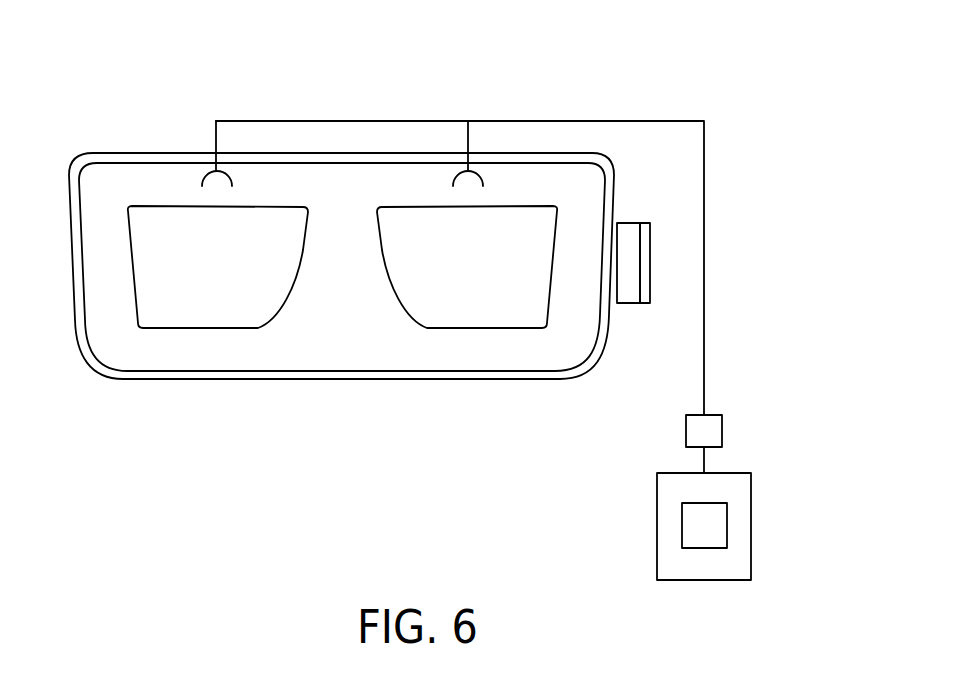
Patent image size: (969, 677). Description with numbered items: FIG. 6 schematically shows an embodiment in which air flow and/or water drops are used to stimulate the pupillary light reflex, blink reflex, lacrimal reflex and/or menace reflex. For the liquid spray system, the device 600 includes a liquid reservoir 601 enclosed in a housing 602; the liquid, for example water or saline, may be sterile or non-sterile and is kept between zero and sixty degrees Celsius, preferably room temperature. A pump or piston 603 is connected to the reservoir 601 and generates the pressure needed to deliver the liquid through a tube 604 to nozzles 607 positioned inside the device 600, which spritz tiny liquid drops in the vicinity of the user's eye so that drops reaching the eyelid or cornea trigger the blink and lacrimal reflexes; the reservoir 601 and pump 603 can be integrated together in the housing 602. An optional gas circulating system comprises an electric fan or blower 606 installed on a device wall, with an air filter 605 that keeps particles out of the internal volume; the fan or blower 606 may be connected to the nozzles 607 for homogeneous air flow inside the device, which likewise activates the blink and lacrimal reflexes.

The device 600 is at (320, 519).
The liquid reservoir 601 is at (682, 530).
The housing 602 is at (657, 504).
The pump or piston 603 is at (686, 432).
The tube 604 is at (704, 317).
The air filter 605 is at (650, 263).
The electric fan or blower 606 is at (627, 223).
The nozzles 607 is at (462, 172).